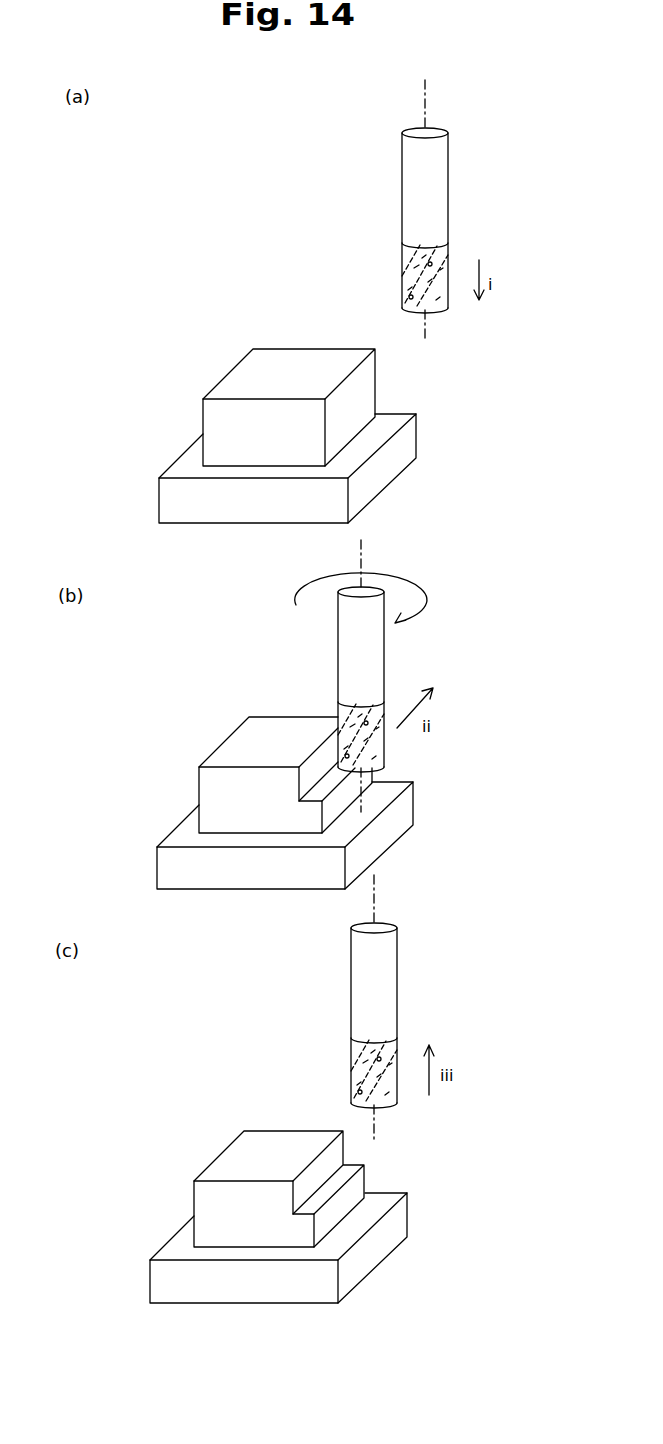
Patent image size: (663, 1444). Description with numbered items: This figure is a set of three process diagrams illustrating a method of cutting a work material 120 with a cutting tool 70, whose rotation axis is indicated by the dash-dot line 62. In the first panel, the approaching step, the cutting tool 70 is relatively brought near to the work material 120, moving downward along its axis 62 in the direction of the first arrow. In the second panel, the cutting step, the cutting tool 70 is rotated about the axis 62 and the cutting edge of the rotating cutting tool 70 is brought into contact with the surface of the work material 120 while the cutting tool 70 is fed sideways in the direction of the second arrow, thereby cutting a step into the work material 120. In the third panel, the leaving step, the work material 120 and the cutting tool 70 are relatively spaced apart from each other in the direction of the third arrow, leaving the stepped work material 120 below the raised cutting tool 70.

The cutting tool 70 is at (381, 260).
The tool rotation axis 62 is at (423, 336).
The work material 120 is at (203, 427).